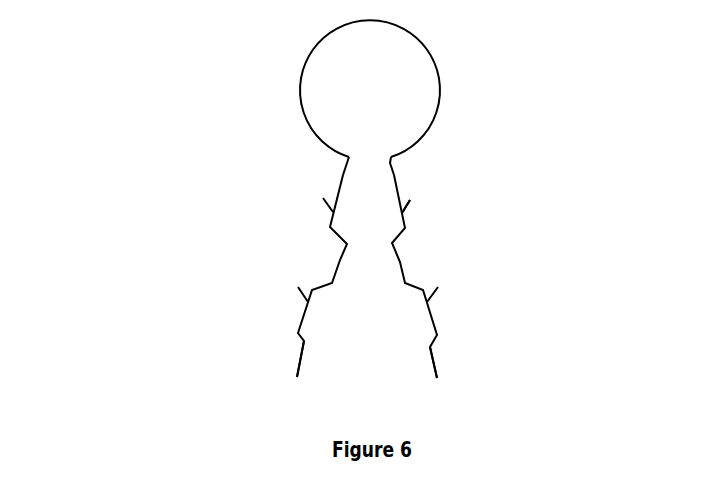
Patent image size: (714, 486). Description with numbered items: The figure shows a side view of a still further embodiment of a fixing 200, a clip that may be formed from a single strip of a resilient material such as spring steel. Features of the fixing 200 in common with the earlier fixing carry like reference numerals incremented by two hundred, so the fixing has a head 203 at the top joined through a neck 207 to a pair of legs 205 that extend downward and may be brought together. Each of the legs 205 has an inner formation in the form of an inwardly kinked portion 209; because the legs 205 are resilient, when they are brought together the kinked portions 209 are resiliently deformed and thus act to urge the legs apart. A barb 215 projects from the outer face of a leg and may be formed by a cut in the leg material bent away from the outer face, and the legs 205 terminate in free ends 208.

The fixing 200 is at (150, 105).
The circular head 203 is at (447, 68).
The neck 207 is at (352, 148).
The inwardly kinked portion 209 is at (330, 262).
The legs 205 is at (438, 315).
The barb 215 is at (443, 200).
The leg free ends 208 is at (296, 376).